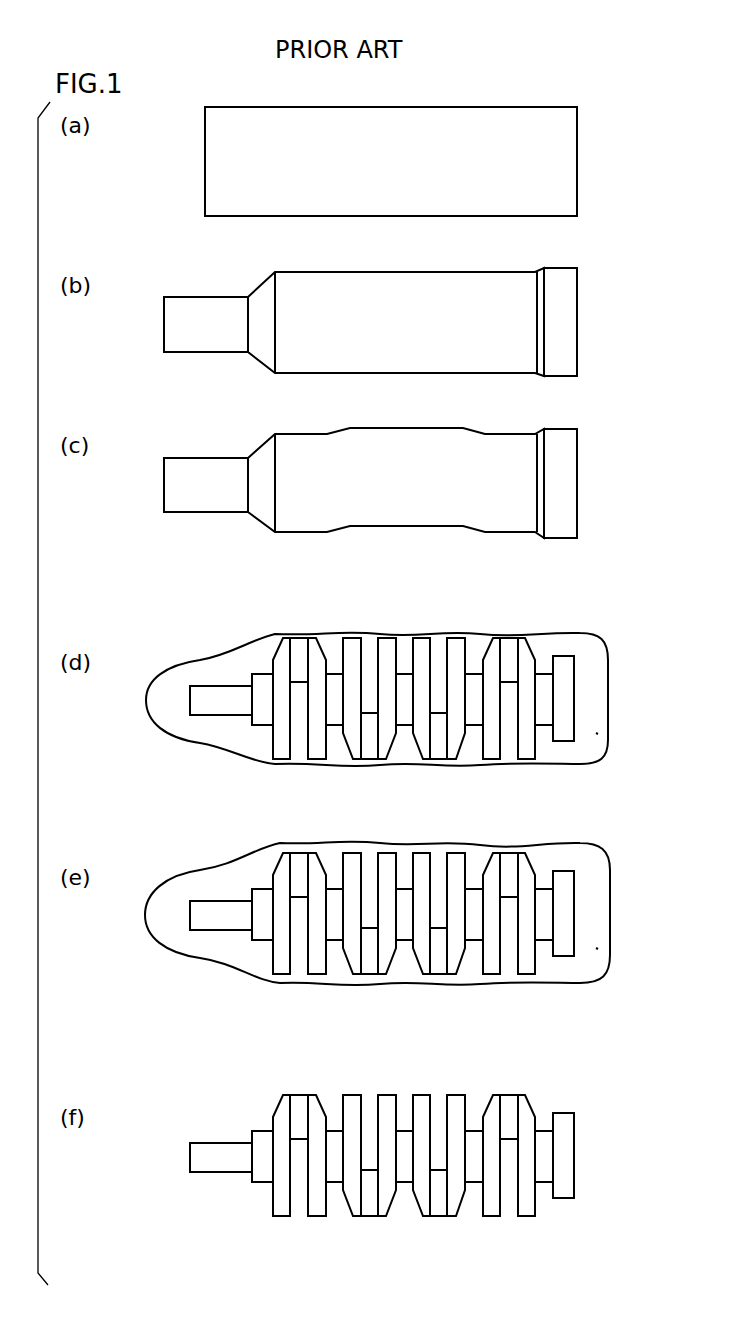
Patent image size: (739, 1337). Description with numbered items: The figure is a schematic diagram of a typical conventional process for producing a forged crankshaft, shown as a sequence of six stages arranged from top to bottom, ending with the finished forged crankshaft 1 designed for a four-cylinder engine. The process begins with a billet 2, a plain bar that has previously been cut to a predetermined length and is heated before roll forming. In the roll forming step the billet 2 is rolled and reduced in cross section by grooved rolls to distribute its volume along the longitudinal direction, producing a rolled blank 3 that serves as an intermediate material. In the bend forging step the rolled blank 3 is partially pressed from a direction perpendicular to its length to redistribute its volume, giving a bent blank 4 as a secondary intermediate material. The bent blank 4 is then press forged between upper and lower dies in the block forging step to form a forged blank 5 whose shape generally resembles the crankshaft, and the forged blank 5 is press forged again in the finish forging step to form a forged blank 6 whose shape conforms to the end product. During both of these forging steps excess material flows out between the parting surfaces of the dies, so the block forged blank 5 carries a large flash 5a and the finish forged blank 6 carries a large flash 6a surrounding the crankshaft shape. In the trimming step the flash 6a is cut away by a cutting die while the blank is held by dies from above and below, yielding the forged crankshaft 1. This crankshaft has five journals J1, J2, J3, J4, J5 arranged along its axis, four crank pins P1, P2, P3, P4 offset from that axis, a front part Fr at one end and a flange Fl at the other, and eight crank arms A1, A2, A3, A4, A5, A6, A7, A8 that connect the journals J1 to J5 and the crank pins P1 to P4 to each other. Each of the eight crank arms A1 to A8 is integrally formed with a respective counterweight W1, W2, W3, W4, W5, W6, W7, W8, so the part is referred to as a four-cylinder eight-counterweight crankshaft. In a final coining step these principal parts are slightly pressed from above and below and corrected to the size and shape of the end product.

The forged crankshaft 1 is at (412, 1157).
The billet 2 is at (592, 129).
The rolled blank 3 is at (592, 291).
The bent blank 4 is at (590, 455).
The block forged blank 5 is at (407, 690).
The flash of block forged blank 5a is at (597, 733).
The finish forged blank 6 is at (407, 905).
The flash of finish forged blank 6a is at (597, 948).
The front part Fr is at (216, 1142).
The flange Fl is at (594, 1114).
The journal J1 is at (265, 1130).
The journal J2 is at (335, 1130).
The journal J3 is at (404, 1130).
The journal J4 is at (475, 1130).
The journal J5 is at (543, 1130).
The crank pin P1 is at (299, 1094).
The crank pin P2 is at (372, 1216).
The crank pin P3 is at (440, 1216).
The crank pin P4 is at (508, 1094).
The crank arm A1 is at (280, 1105).
The crank arm A2 is at (321, 1105).
The crank arm A3 is at (352, 1216).
The crank arm A4 is at (390, 1216).
The crank arm A5 is at (422, 1216).
The crank arm A6 is at (460, 1216).
The crank arm A7 is at (490, 1104).
The crank arm A8 is at (530, 1104).
The counterweight W1 is at (287, 1157).
The counterweight W2 is at (323, 1157).
The counterweight W3 is at (358, 1157).
The counterweight W4 is at (393, 1157).
The counterweight W5 is at (428, 1157).
The counterweight W6 is at (462, 1157).
The counterweight W7 is at (498, 1157).
The counterweight W8 is at (533, 1157).